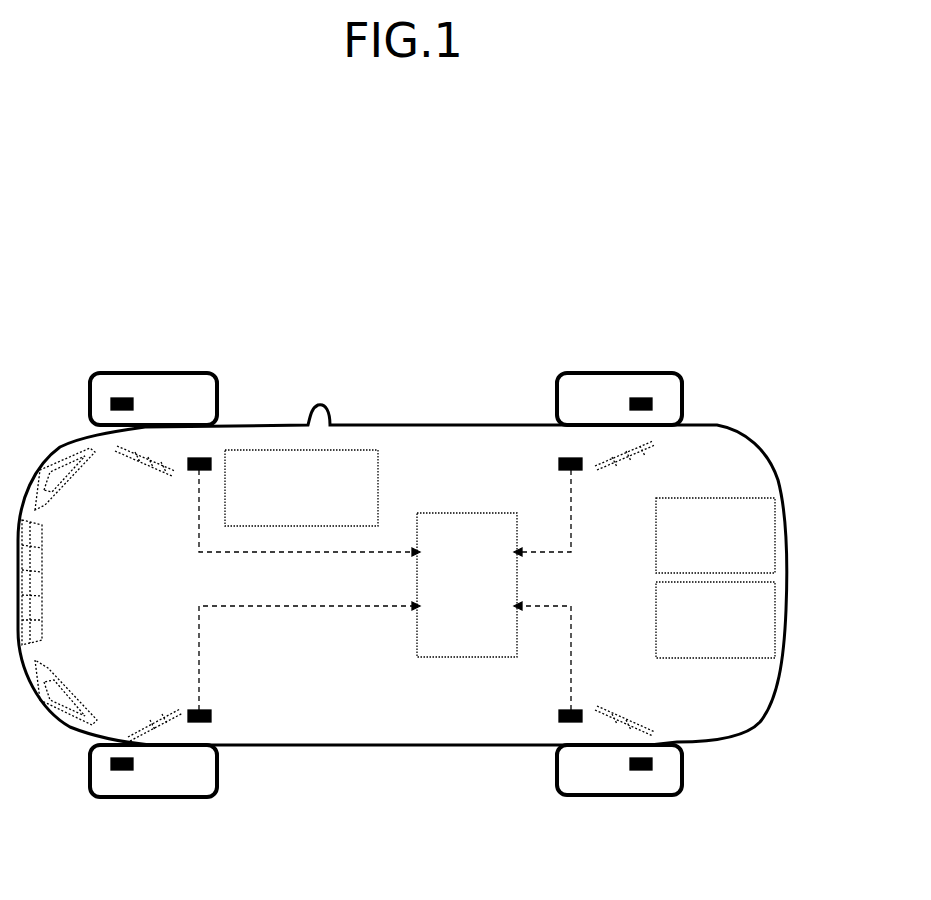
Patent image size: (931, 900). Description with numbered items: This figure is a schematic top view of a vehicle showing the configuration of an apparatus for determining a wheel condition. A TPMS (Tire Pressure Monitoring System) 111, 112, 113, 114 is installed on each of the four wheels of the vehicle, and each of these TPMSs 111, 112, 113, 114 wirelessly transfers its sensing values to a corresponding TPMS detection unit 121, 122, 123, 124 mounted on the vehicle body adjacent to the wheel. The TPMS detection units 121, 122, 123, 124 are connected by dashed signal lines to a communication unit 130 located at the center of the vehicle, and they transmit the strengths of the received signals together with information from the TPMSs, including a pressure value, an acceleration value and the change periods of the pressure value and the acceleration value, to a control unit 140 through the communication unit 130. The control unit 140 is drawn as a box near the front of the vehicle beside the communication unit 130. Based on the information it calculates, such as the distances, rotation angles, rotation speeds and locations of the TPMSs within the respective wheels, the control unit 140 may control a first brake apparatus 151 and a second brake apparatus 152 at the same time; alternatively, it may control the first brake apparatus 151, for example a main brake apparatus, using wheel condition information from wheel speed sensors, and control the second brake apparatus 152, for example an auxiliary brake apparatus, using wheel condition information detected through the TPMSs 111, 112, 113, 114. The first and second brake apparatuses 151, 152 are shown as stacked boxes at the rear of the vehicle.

The TPMS (Tire Pressure Monitoring System) 111 is at (116, 398).
The TPMS (Tire Pressure Monitoring System) 112 is at (116, 770).
The TPMS (Tire Pressure Monitoring System) 113 is at (636, 398).
The TPMS (Tire Pressure Monitoring System) 114 is at (636, 770).
The TPMS detection unit 121 is at (194, 472).
The TPMS detection unit 122 is at (194, 710).
The TPMS detection unit 123 is at (573, 472).
The TPMS detection unit 124 is at (573, 710).
The communication unit 130 is at (458, 513).
The control unit 140 is at (355, 450).
The first brake apparatus 151 is at (740, 498).
The second brake apparatus 152 is at (745, 658).